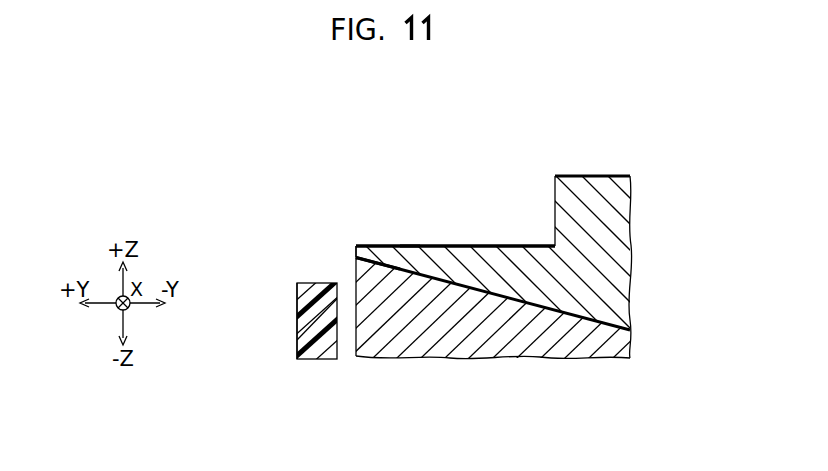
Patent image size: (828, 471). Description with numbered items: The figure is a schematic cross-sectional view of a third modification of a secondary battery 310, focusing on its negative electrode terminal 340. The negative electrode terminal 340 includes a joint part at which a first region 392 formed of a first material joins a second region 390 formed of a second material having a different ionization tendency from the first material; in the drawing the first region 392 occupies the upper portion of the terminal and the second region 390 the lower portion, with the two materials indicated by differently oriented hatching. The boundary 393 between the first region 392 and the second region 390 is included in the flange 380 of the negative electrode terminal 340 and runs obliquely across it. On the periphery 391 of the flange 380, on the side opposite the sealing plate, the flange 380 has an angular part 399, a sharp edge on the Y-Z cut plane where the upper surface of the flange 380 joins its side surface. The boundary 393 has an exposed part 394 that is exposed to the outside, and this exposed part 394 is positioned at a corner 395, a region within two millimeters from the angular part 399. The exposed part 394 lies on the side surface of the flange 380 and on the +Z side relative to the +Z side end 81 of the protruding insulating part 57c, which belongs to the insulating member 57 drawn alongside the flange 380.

The secondary battery 310 is at (547, 137).
The negative electrode terminal 340 is at (607, 175).
The flange 380 is at (453, 245).
The first region 392 is at (520, 256).
The angular part 399 is at (360, 244).
The corner 395 is at (357, 245).
The exposed part 394 is at (355, 256).
The boundary 393 is at (602, 327).
The periphery 391 is at (356, 342).
The second region 390 is at (533, 352).
The +Z side end 81 is at (312, 283).
The insulating member 57 is at (297, 307).
The protruding insulating part 57c is at (302, 327).